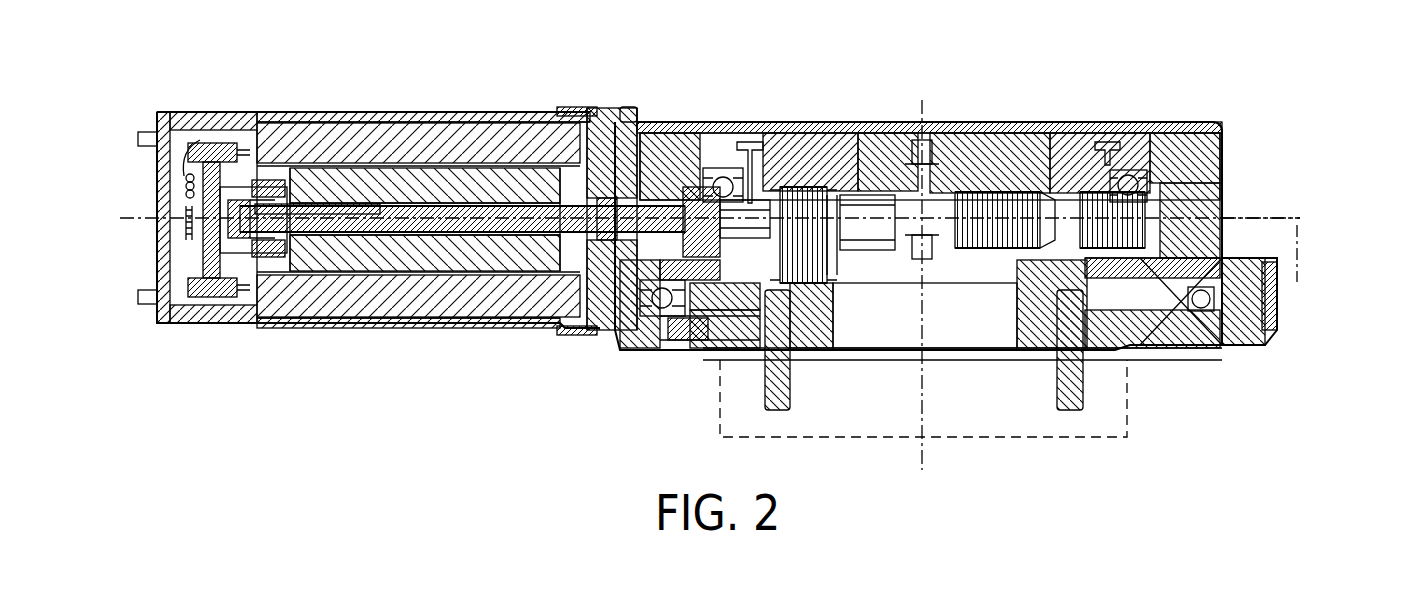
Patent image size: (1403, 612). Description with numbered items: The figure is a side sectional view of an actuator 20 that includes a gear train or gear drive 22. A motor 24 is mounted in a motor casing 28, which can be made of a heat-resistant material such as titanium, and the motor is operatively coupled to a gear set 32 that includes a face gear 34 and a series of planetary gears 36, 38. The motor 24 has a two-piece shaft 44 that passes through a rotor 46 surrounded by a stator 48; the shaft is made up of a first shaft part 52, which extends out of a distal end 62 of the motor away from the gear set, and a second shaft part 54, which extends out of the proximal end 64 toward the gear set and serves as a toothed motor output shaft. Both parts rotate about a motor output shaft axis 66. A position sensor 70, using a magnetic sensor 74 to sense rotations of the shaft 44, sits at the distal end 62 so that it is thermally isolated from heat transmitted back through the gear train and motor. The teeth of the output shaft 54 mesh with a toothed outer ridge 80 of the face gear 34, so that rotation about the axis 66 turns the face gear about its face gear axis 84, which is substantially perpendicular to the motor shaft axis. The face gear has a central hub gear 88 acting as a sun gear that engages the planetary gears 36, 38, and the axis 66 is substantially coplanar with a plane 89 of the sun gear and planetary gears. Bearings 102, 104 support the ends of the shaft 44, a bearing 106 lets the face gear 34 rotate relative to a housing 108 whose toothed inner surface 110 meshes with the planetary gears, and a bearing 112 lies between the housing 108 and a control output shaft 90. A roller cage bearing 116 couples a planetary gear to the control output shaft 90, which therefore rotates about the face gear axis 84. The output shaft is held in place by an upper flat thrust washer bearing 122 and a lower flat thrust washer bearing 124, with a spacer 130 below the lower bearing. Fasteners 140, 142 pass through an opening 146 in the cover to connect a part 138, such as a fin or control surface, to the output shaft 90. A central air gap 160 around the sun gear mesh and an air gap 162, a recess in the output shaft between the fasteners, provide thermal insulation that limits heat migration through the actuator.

The actuator 20 is at (525, 76).
The gear train 22 is at (566, 343).
The motor 24 is at (347, 323).
The motor casing 28 is at (393, 323).
The gear set 32 is at (1010, 128).
The face gear 34 is at (1068, 165).
The planetary gear 36 is at (760, 208).
The planetary gear 38 is at (972, 192).
The shaft 44 is at (325, 258).
The rotor 46 is at (340, 192).
The stator 48 is at (362, 140).
The first shaft part 52 is at (265, 200).
The second shaft part 54 is at (460, 210).
The distal end 62 is at (210, 332).
The proximal end 64 is at (640, 96).
The motor output shaft axis 66 is at (1248, 225).
The position sensor 70 is at (190, 232).
The magnetic sensor 74 is at (192, 205).
The toothed outer ridge 80 is at (678, 166).
The face gear axis 84 is at (922, 410).
The central hub gear 88 is at (930, 268).
The plane 89 is at (1297, 278).
The control output shaft 90 is at (749, 332).
The bearing 102 is at (213, 140).
The bearing 104 is at (605, 130).
The bearing 106 is at (1135, 170).
The housing 108 is at (1205, 272).
The toothed inner surface 110 is at (1170, 228).
The bearing 112 is at (1225, 345).
The roller cage bearing 116 is at (812, 187).
The upper flat thrust washer bearing 122 is at (604, 332).
The lower flat thrust washer bearing 124 is at (660, 338).
The spacer 130 is at (690, 335).
The part 138 is at (1115, 412).
The fastener 140 is at (778, 395).
The fastener 142 is at (1070, 400).
The opening 146 is at (850, 357).
The central air gap 160 is at (862, 190).
The air gap 162 is at (898, 340).